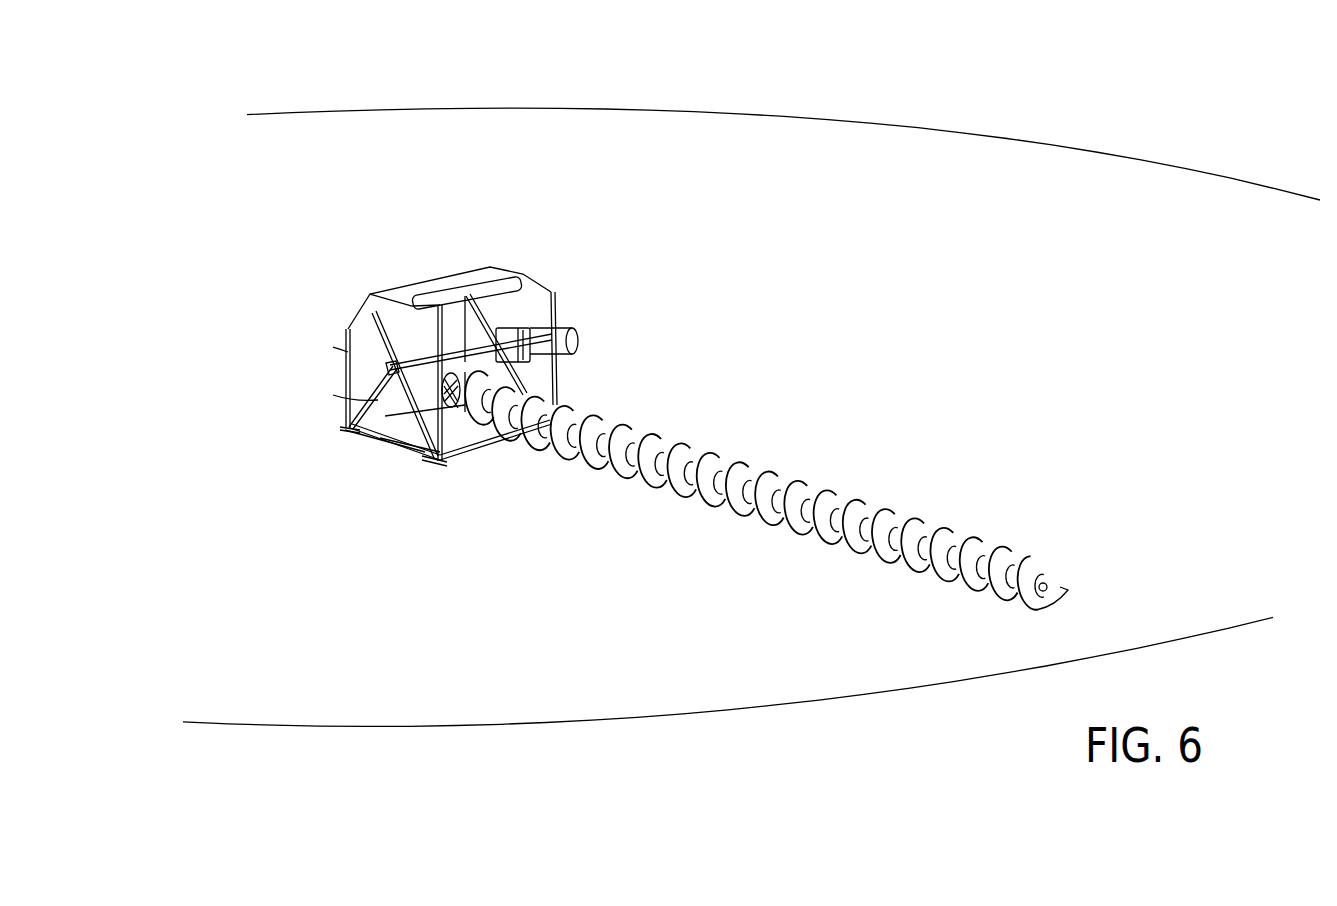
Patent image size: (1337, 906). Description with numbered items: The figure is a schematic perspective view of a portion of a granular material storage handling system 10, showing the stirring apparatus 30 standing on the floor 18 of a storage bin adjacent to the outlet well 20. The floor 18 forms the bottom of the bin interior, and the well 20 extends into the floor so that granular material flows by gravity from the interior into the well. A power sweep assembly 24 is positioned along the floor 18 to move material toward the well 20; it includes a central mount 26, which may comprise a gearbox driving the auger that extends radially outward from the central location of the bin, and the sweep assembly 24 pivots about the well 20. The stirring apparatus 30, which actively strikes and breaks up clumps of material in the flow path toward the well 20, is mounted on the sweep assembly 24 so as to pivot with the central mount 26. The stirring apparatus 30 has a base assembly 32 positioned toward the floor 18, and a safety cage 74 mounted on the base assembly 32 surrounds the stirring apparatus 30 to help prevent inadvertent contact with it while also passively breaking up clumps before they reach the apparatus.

The granular material storage handling system 10 is at (802, 64).
The floor 18 is at (962, 168).
The outlet well 20 is at (406, 436).
The power sweep assembly 24 is at (755, 436).
The central mount 26 is at (378, 423).
The granular material stirring apparatus 30 is at (592, 268).
The base assembly 32 is at (377, 403).
The safety cage 74 is at (348, 354).